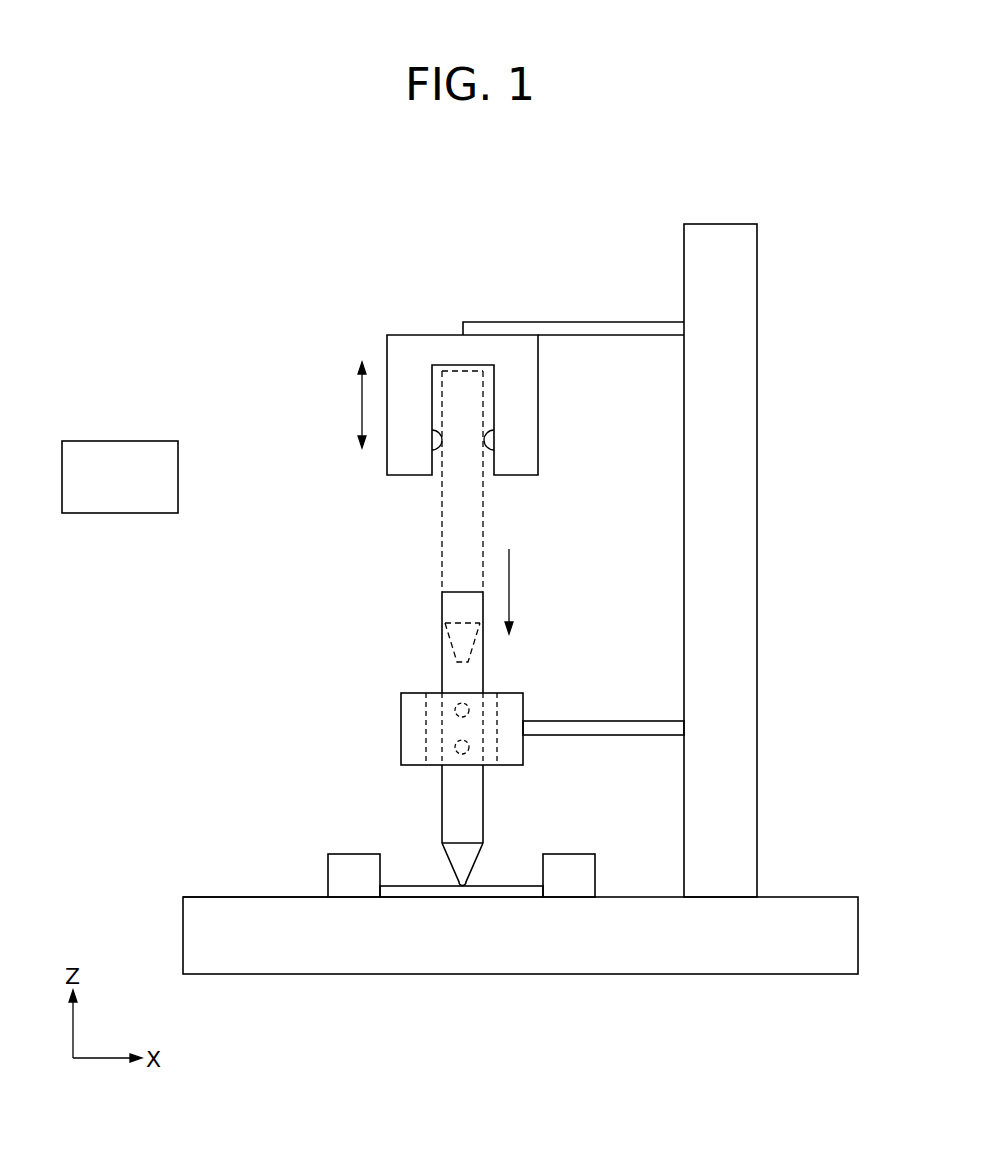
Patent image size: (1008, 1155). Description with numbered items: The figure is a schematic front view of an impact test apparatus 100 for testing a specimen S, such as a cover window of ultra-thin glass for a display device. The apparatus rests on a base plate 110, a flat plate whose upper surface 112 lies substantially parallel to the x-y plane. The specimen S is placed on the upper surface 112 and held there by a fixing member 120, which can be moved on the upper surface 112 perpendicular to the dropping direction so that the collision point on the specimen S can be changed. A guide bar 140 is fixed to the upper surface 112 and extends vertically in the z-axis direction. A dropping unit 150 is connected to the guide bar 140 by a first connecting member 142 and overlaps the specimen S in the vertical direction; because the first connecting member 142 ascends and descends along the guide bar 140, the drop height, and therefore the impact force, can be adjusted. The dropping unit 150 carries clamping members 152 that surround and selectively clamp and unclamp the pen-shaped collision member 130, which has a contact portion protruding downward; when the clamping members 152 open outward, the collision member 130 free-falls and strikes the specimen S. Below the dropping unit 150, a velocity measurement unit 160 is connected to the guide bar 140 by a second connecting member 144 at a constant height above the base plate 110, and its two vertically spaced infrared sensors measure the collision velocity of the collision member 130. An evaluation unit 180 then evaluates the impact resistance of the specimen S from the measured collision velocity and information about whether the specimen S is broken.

The impact test apparatus 100 is at (190, 250).
The base plate 110 is at (527, 947).
The upper surface 112 is at (222, 897).
The fixing member 120 is at (352, 885).
The collision member 130 is at (441, 813).
The guide bar 140 is at (759, 558).
The first connecting member 142 is at (618, 328).
The second connecting member 144 is at (618, 728).
The dropping unit 150 is at (410, 340).
The clamping members 152 is at (496, 440).
The velocity measurement unit 160 is at (405, 729).
The evaluation unit 180 is at (121, 447).
The specimen S is at (420, 896).